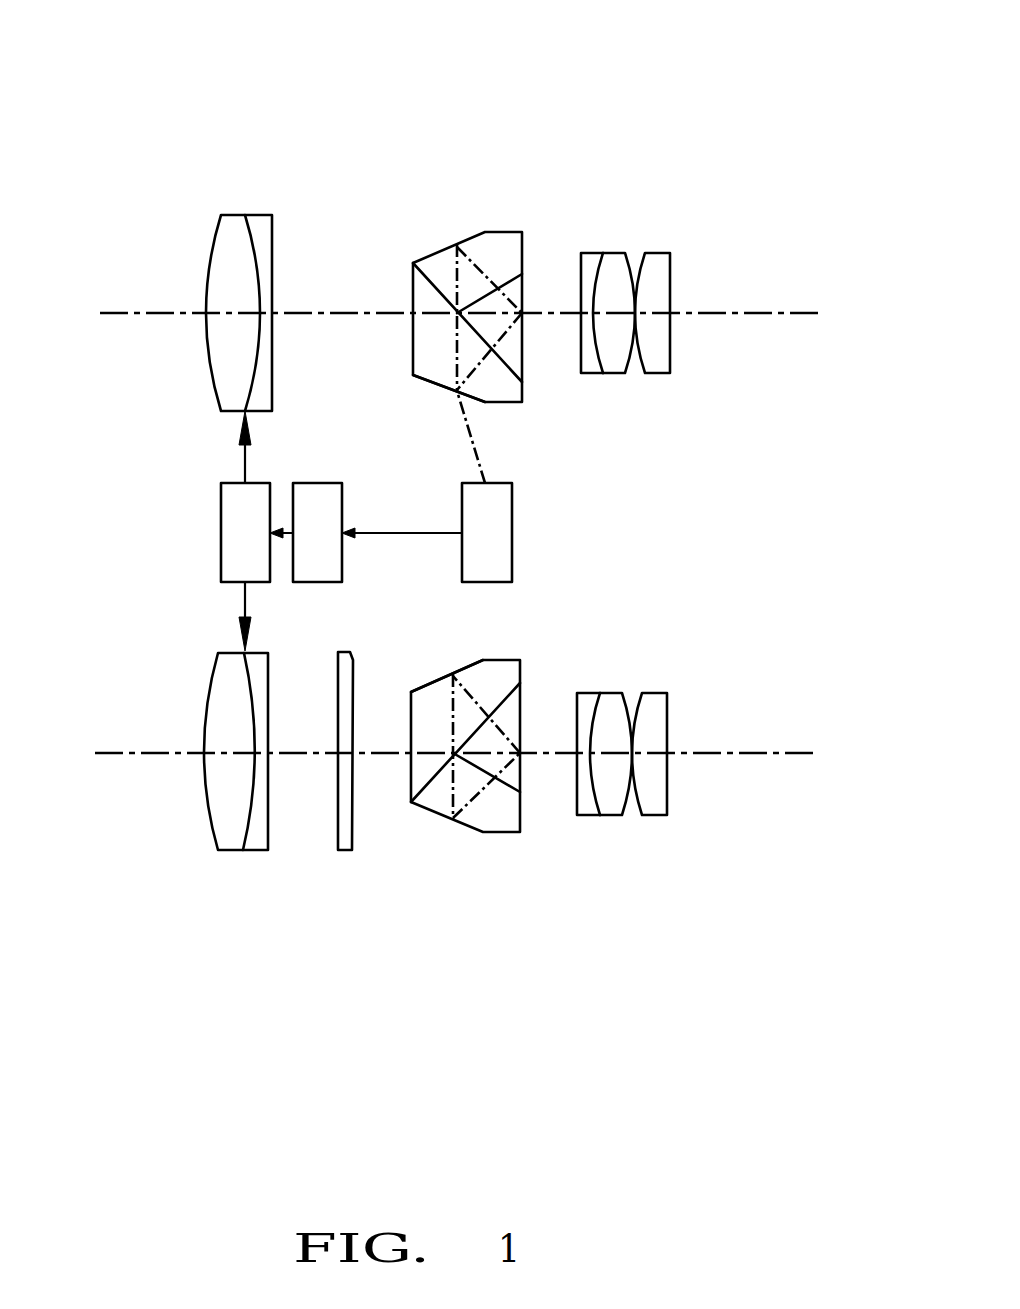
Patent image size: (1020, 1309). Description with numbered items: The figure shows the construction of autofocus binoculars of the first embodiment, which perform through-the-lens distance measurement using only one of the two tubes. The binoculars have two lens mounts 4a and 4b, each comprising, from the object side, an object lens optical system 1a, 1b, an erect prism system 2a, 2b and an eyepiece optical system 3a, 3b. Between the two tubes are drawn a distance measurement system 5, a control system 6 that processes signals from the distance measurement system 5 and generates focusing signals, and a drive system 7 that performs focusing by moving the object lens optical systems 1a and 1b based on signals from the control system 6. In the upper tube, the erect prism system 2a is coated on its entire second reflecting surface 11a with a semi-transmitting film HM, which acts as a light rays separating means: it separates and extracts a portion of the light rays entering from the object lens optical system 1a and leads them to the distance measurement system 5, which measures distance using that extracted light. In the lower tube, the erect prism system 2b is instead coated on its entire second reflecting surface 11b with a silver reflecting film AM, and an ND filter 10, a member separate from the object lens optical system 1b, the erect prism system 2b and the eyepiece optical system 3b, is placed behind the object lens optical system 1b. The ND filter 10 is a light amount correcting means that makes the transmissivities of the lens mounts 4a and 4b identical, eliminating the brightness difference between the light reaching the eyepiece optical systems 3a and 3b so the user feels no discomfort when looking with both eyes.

The object lens optical system 1a is at (292, 192).
The erect prism system 2a is at (535, 192).
The eyepiece optical system 3a is at (692, 192).
The lens mount 4a is at (690, 97).
The object lens optical system 1b is at (285, 873).
The erect prism system 2b is at (530, 873).
The eyepiece optical system 3b is at (687, 873).
The lens mount 4b is at (687, 972).
The distance measurement system 5 is at (427, 486).
The control system 6 is at (306, 532).
The drive system 7 is at (245, 531).
The ND filter 10 is at (343, 852).
The second reflecting surface 11a is at (415, 378).
The second reflecting surface 11b is at (426, 676).
The semi-transmitting film HM is at (447, 390).
The silver reflecting film AM is at (452, 670).